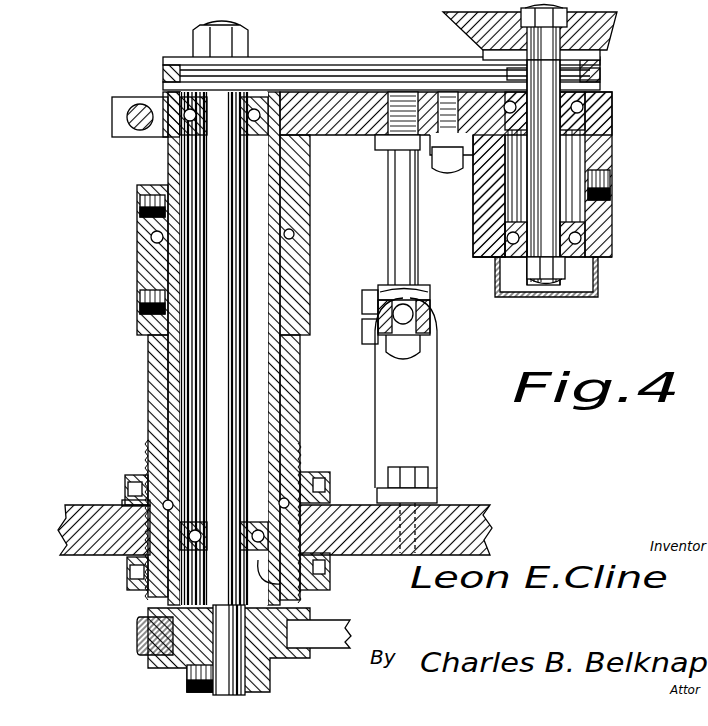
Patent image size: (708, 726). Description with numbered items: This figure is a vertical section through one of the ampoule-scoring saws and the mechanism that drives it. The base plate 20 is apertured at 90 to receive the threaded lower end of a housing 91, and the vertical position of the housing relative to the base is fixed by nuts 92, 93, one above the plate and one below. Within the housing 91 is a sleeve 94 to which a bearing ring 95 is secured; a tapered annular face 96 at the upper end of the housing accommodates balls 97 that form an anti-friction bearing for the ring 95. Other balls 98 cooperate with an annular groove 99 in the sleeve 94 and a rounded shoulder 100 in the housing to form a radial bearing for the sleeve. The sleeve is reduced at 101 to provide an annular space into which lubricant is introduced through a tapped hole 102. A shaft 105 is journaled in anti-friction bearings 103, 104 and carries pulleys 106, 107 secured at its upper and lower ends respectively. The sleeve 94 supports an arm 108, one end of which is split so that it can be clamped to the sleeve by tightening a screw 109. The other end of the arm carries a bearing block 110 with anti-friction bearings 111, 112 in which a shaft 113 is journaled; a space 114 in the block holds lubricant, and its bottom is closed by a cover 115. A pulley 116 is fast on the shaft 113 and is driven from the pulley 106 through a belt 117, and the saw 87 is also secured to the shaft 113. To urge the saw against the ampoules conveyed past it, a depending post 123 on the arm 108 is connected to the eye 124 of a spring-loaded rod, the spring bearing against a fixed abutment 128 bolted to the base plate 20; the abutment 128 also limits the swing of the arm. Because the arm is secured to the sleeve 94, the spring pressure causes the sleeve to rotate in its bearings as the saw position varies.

The base plate 20 is at (473, 507).
The saw 87 is at (618, 12).
The aperture 90 is at (72, 526).
The housing 91 is at (150, 396).
The nut 92 is at (128, 474).
The nut 93 is at (130, 585).
The sleeve 94 is at (165, 163).
The bearing ring 95 is at (140, 224).
The tapered annular face 96 is at (160, 248).
The balls 97 is at (151, 238).
The balls 98 is at (124, 501).
The annular groove 99 is at (299, 452).
The rounded shoulder 100 is at (283, 500).
The reduced portion 101 is at (301, 383).
The tapped hole 102 is at (140, 312).
The anti-friction bearing 103 is at (172, 95).
The anti-friction bearing 104 is at (298, 592).
The shaft 105 is at (250, 168).
The pulley 106 is at (276, 57).
The pulley 107 is at (162, 660).
The arm 108 is at (362, 137).
The screw 109 is at (127, 117).
The bearing block 110 is at (613, 228).
The anti-friction bearing 111 is at (613, 108).
The anti-friction bearing 112 is at (590, 240).
The shaft 113 is at (588, 150).
The space 114 is at (582, 182).
The cover 115 is at (593, 294).
The pulley 116 is at (592, 84).
The belt 117 is at (376, 70).
The depending post 123 is at (410, 287).
The eye 124 is at (432, 318).
The fixed abutment 128 is at (433, 378).